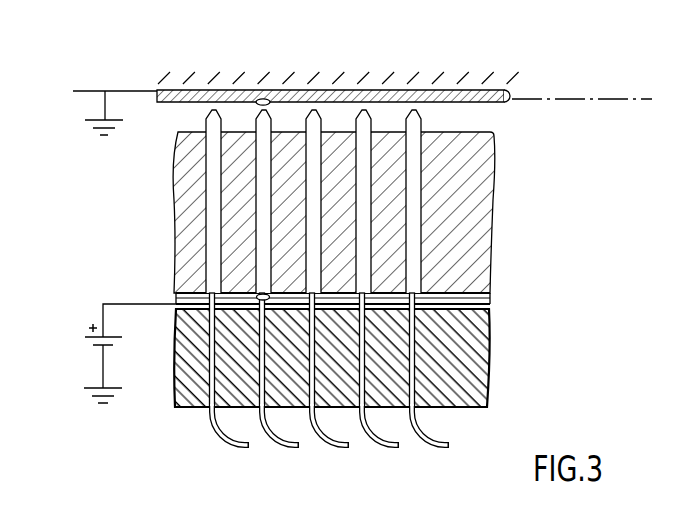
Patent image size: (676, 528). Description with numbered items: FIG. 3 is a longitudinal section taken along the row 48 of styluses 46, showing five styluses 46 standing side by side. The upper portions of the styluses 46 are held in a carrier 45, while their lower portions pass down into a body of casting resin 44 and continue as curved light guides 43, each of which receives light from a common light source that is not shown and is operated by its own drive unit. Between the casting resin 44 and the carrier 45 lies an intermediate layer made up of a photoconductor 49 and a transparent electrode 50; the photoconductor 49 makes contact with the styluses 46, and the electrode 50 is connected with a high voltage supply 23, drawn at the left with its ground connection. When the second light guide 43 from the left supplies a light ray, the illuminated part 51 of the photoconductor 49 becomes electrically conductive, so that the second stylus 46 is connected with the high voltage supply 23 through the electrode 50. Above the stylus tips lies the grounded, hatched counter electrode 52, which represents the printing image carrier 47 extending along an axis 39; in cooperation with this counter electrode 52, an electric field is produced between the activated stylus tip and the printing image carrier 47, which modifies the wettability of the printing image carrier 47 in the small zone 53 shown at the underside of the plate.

The high voltage supply 23 is at (93, 317).
The axis 39 is at (608, 98).
The light guide 43 is at (307, 449).
The casting resin 44 is at (467, 375).
The carrier 45 is at (468, 175).
The stylus 46 is at (420, 128).
The printing image carrier 47 is at (500, 98).
The row of styluses 48 is at (316, 262).
The photoconductor 49 is at (490, 293).
The transparent electrode 50 is at (490, 306).
The illuminated part of photoconductor 51 is at (262, 294).
The counter electrode 52 is at (197, 84).
The zone 53 is at (262, 97).